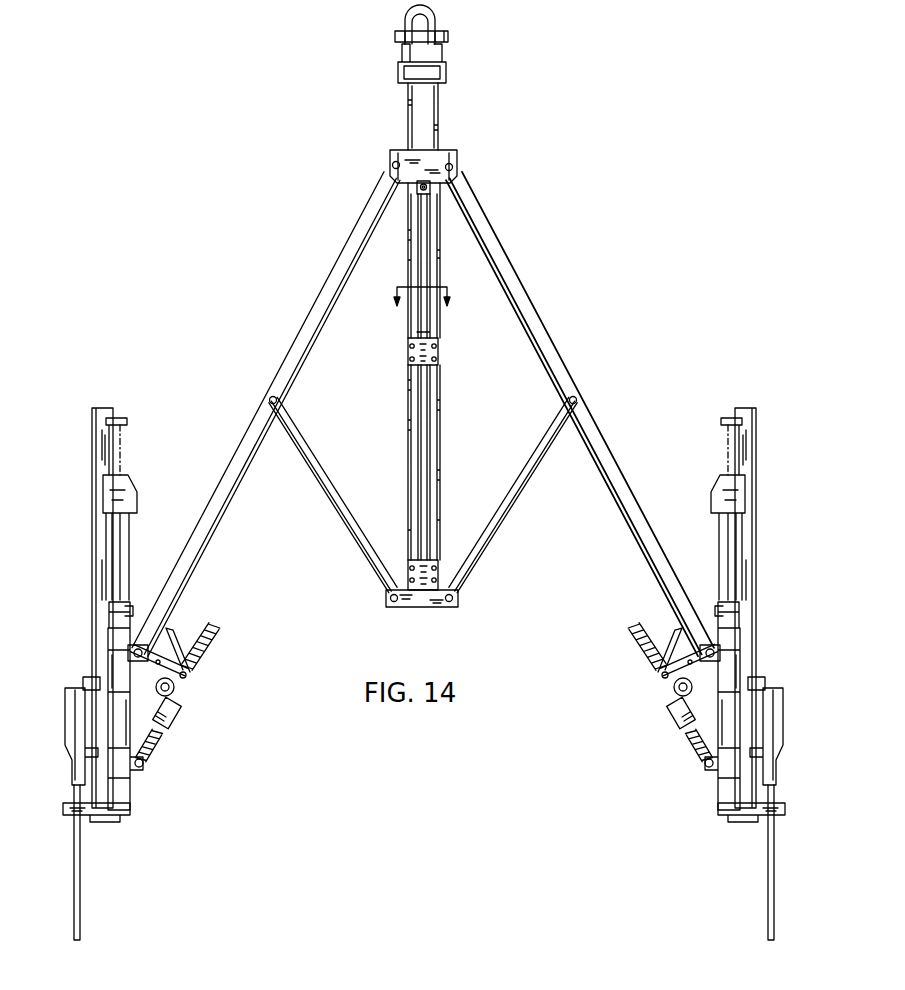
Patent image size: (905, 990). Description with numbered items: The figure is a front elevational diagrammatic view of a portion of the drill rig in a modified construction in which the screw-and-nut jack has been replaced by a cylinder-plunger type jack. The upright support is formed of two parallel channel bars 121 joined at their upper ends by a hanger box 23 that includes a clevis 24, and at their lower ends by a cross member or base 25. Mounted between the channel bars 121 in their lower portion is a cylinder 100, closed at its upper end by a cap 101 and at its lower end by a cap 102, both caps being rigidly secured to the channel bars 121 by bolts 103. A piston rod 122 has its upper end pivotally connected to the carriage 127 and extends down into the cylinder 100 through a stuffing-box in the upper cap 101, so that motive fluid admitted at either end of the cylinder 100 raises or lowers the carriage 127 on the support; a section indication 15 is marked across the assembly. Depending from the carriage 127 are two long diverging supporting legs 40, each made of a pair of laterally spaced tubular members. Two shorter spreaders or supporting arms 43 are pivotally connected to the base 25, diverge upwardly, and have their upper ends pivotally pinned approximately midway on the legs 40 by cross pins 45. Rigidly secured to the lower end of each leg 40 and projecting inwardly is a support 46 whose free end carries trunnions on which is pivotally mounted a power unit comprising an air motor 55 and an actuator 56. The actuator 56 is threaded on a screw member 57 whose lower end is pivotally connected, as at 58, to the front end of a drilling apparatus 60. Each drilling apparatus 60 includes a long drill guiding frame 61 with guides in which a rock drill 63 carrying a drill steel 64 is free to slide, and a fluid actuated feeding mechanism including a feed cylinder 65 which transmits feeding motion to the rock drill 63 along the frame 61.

The clevis 24 is at (433, 9).
The hanger box 23 is at (446, 78).
The channel bars 121 is at (404, 110).
The carriage 127 is at (456, 162).
The piston rod 122 is at (423, 215).
The section line 15 is at (418, 311).
The bolts 103 is at (409, 359).
The cap 101 is at (440, 353).
The cylinder 100 is at (420, 463).
The cap 102 is at (436, 574).
The base 25 is at (414, 607).
The supporting legs 40 is at (293, 342).
The cross pins 45 is at (579, 401).
The supporting arms 43 is at (313, 474).
The drill guiding frame 61 is at (92, 442).
The drilling apparatus 60 is at (90, 511).
The support 46 is at (182, 631).
The screw member 57 is at (213, 638).
The air motor 55 is at (176, 690).
The actuator 56 is at (181, 714).
The pivotal connection 58 is at (144, 766).
The feed cylinder 65 is at (130, 793).
The rock drill 63 is at (75, 729).
The drill steel 64 is at (82, 878).